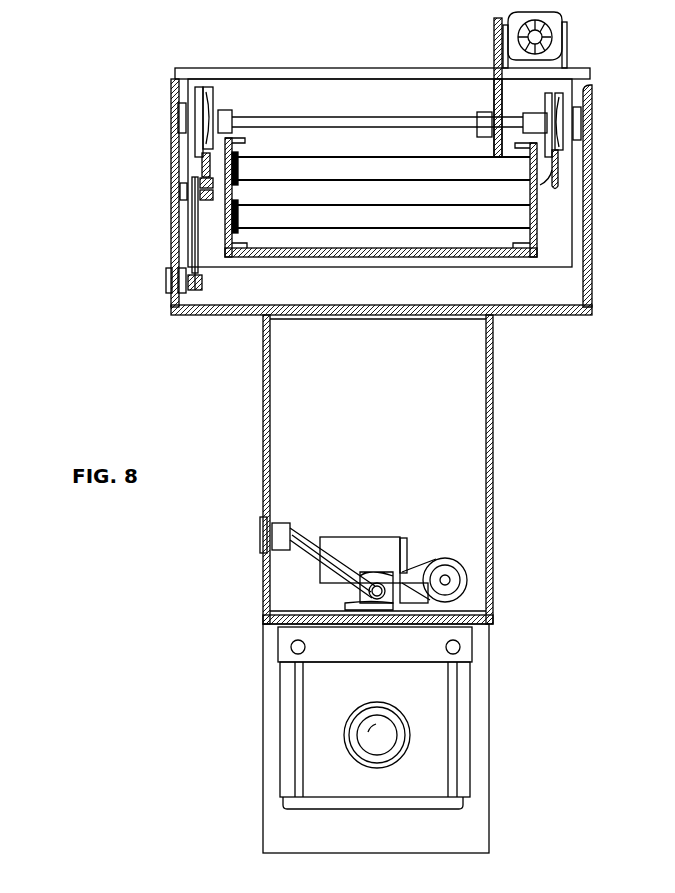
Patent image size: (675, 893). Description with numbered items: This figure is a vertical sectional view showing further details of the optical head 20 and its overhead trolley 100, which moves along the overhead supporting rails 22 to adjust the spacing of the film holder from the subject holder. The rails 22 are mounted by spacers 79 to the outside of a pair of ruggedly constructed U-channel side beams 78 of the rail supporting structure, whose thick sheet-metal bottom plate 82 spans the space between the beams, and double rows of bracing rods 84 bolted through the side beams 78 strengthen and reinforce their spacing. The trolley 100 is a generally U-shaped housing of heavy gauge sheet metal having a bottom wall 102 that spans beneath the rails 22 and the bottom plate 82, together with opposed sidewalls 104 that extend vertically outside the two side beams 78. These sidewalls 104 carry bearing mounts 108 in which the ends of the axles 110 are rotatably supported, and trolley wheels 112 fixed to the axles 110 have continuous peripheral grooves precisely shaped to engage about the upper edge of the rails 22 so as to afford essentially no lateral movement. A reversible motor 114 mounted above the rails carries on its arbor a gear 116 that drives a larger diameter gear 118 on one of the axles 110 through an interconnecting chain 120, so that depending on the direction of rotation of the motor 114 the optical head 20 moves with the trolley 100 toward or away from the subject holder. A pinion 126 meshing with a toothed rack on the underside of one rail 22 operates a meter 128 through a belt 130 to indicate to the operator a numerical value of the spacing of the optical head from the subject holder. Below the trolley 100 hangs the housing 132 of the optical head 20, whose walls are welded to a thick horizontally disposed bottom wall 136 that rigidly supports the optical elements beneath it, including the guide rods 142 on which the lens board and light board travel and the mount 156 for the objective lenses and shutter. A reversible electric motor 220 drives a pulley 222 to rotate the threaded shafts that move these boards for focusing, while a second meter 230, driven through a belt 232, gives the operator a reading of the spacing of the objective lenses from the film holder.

The optical head 20 is at (353, 584).
The overhead rails 22 is at (558, 170).
The U-channel side beams 78 is at (227, 241).
The spacers 79 is at (540, 177).
The bottom plate 82 is at (410, 257).
The bracing rods 84 is at (408, 222).
The trolley 100 is at (338, 184).
The bottom wall 102 is at (531, 318).
The sidewalls 104 is at (172, 162).
The bearing mounts 108 is at (178, 111).
The axles 110 is at (303, 119).
The trolley wheels 112 is at (208, 88).
The reversible motor 114 is at (562, 22).
The gear 116 is at (494, 30).
The larger diameter gear 118 is at (478, 135).
The interconnecting chain 120 is at (493, 92).
The pinion 126 is at (182, 197).
The meter 128 is at (168, 288).
The belt 130 is at (195, 222).
The housing 132 is at (494, 441).
The bottom wall 136 is at (484, 608).
The guide rods 142 is at (291, 647).
The mount 156 is at (367, 760).
The reversible electric motor 220 is at (381, 546).
The pulley 222 is at (467, 582).
The second meter 230 is at (258, 535).
The belt 232 is at (315, 530).